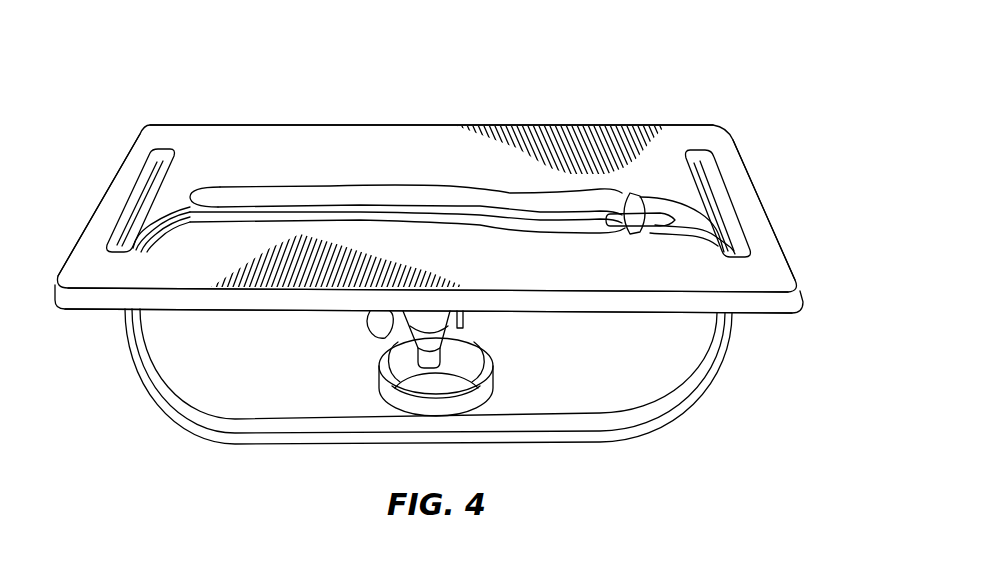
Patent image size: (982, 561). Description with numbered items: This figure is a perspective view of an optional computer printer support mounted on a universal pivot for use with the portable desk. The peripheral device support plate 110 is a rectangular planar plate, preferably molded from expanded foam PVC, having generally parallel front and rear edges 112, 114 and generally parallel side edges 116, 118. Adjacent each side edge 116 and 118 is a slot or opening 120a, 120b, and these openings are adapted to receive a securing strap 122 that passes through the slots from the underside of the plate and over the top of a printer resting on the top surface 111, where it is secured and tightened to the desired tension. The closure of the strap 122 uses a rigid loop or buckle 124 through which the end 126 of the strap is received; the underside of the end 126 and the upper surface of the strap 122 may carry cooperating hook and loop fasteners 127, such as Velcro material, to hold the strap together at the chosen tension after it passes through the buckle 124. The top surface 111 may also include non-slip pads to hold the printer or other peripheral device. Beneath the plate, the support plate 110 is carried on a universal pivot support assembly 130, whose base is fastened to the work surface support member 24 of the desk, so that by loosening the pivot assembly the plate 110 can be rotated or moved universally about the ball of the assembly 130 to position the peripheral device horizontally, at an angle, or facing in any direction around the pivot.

The peripheral device support plate 110 is at (666, 113).
The top surface 111 is at (506, 273).
The front edge 112 is at (331, 124).
The rear edge 114 is at (556, 303).
The side edge 116 is at (757, 187).
The side edge 118 is at (110, 177).
The slot or opening 120a is at (695, 158).
The slot or opening 120b is at (166, 158).
The securing strap 122 is at (167, 245).
The rigid loop or buckle 124 is at (627, 221).
The end of strap 126 is at (316, 189).
The hook and loop fasteners 127 is at (262, 212).
The work surface support member 24 is at (197, 379).
The universal pivot support assembly 130 is at (512, 381).